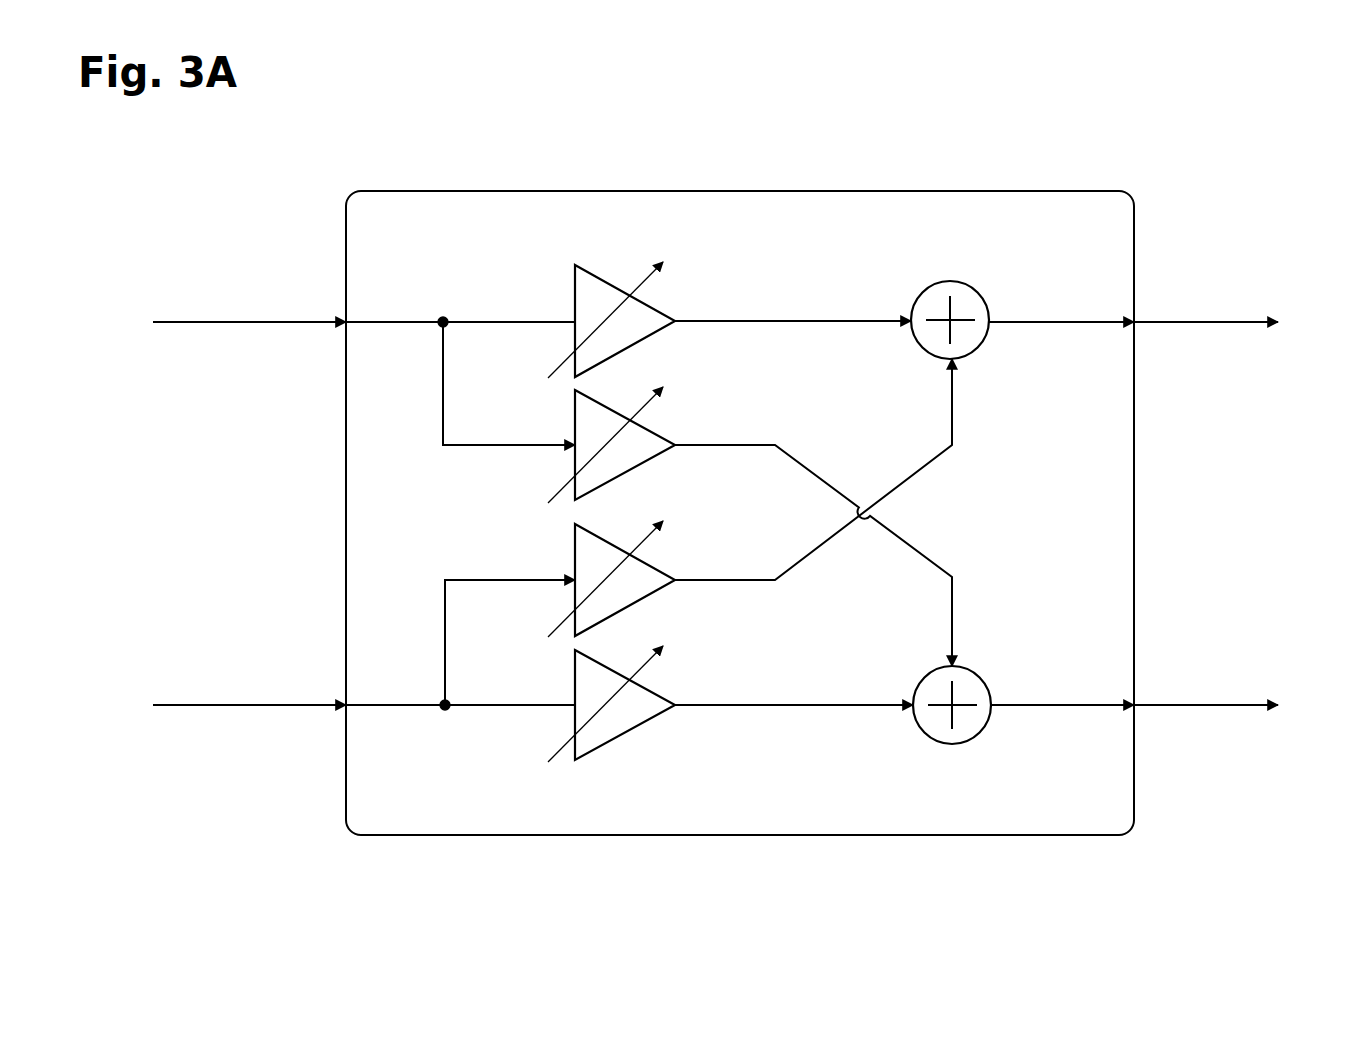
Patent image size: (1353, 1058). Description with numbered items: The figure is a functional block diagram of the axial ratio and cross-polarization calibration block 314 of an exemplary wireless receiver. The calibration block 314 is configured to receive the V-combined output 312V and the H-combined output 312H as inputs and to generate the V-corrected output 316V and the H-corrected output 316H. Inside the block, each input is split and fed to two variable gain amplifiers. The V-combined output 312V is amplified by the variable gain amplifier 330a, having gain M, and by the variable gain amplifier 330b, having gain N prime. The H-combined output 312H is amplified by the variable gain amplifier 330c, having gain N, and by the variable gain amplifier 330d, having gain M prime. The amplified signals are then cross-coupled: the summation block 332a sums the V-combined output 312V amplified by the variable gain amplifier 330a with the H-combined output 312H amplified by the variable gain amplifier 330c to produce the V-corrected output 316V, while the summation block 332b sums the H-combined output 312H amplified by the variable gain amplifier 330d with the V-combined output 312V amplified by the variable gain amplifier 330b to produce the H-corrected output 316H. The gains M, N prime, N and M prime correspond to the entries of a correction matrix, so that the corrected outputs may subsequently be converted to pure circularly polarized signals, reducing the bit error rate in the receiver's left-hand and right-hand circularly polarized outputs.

The axial ratio and cross-polarization calibration block 314 is at (1237, 141).
The V-combined output 312V is at (222, 321).
The H-combined output 312H is at (222, 706).
The V-corrected output 316V is at (1186, 322).
The H-corrected output 316H is at (1188, 710).
The variable gain amplifier (VGA) 330a is at (618, 288).
The variable gain amplifier (VGA) 330b is at (620, 425).
The variable gain amplifier (VGA) 330c is at (618, 556).
The variable gain amplifier (VGA) 330d is at (623, 678).
The summation block 332a is at (946, 281).
The summation block 332b is at (950, 744).